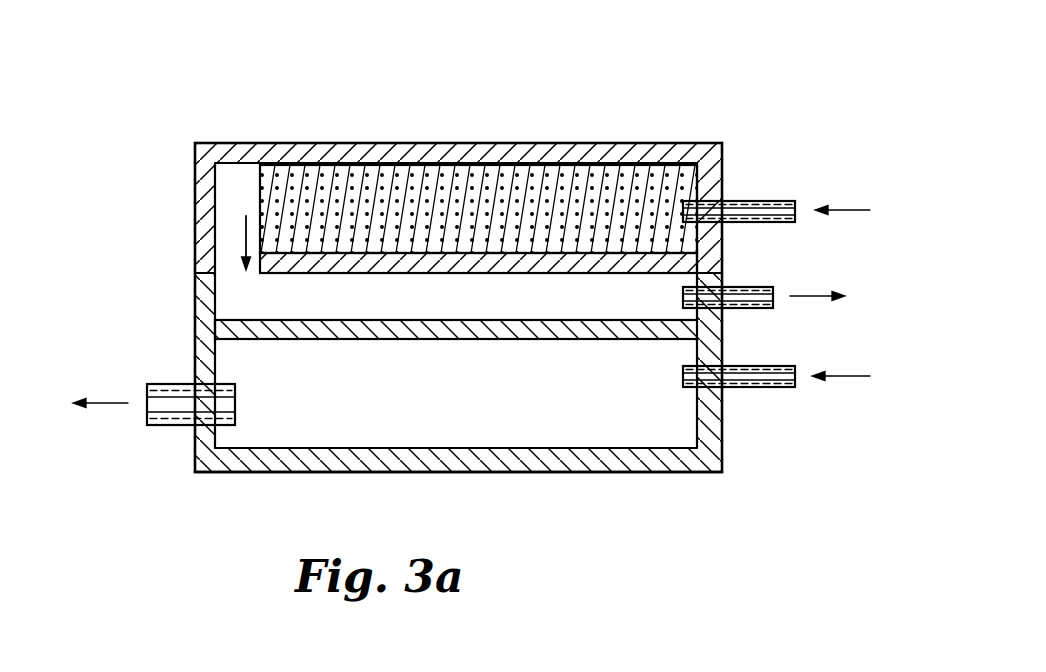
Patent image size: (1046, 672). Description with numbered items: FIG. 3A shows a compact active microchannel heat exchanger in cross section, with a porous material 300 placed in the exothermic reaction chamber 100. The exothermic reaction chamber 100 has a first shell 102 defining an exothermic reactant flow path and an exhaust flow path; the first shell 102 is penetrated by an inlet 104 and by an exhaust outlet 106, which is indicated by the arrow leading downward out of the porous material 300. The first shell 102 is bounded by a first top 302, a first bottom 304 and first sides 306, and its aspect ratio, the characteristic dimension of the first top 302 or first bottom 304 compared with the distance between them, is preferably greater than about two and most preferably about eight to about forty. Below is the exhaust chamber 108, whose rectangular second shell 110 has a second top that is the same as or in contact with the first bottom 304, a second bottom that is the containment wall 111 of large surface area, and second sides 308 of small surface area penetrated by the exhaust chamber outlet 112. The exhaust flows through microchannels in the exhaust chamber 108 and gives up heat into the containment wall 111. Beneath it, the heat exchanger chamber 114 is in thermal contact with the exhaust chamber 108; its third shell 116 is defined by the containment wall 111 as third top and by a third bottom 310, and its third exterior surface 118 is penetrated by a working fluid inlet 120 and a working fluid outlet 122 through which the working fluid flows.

The exothermic reaction chamber 100 is at (592, 96).
The first shell 102 is at (650, 145).
The inlet 104 is at (758, 222).
The exhaust outlet 106 is at (230, 246).
The exhaust chamber 108 is at (403, 309).
The second shell 110 is at (165, 323).
The containment wall 111 is at (420, 330).
The exhaust chamber outlet 112 is at (758, 308).
The heat exchanger chamber 114 is at (555, 376).
The third shell 116 is at (169, 490).
The third exterior surface 118 is at (283, 472).
The working fluid inlet 120 is at (778, 387).
The working fluid outlet 122 is at (170, 426).
The porous material 300 is at (378, 190).
The first top 302 is at (489, 118).
The first bottom 304 is at (544, 300).
The first sides 306 is at (722, 165).
The second sides 308 is at (195, 292).
The third bottom 310 is at (514, 495).